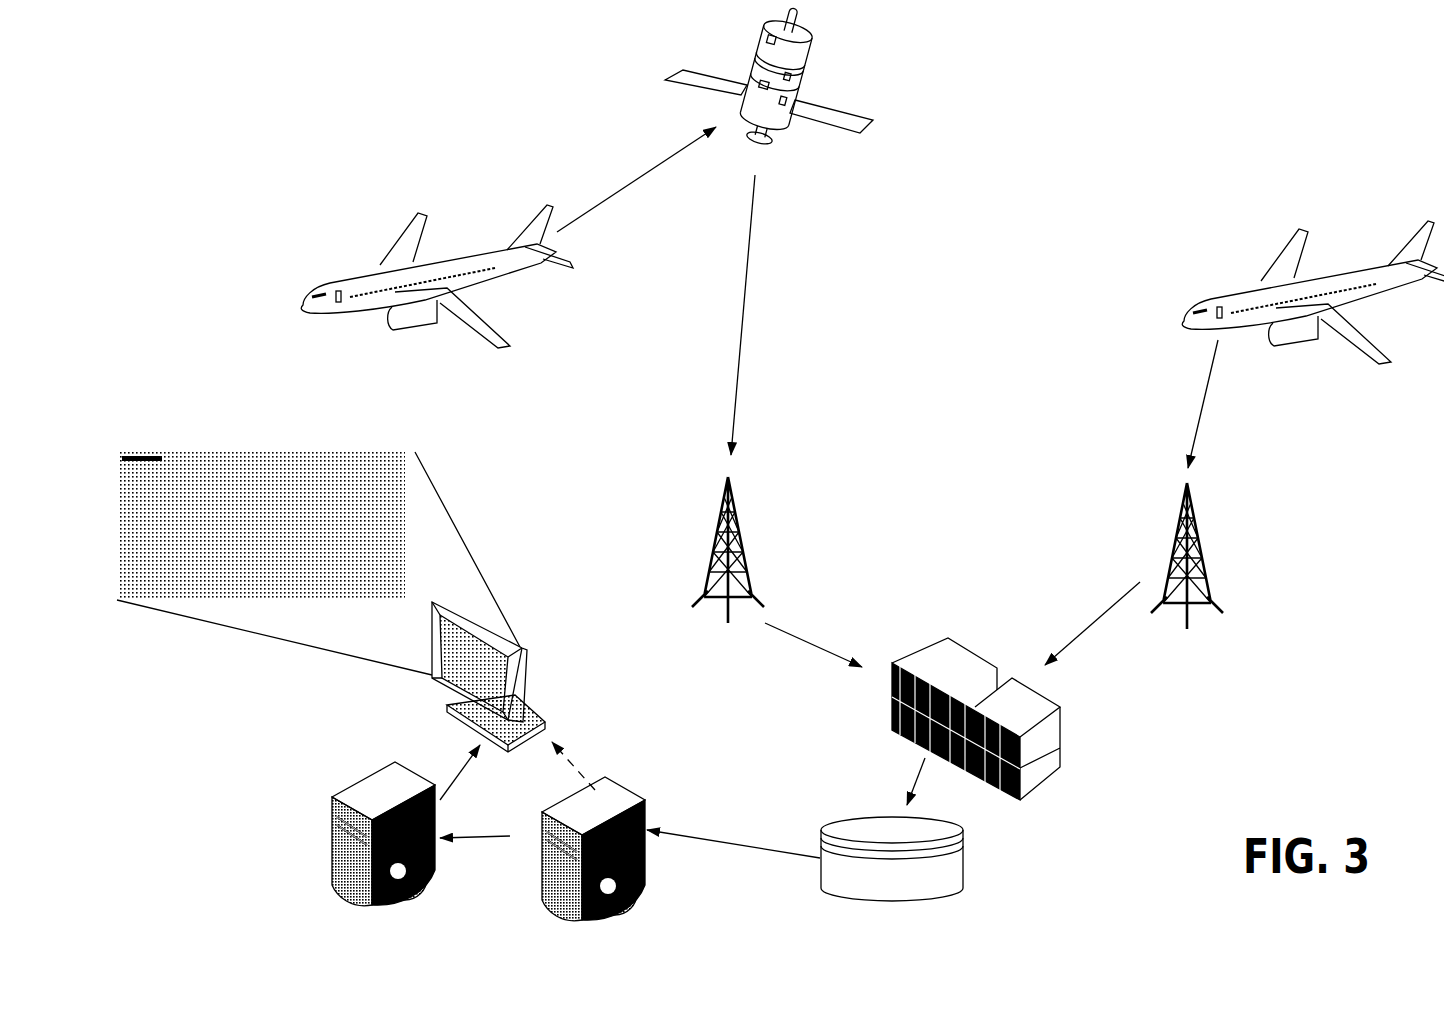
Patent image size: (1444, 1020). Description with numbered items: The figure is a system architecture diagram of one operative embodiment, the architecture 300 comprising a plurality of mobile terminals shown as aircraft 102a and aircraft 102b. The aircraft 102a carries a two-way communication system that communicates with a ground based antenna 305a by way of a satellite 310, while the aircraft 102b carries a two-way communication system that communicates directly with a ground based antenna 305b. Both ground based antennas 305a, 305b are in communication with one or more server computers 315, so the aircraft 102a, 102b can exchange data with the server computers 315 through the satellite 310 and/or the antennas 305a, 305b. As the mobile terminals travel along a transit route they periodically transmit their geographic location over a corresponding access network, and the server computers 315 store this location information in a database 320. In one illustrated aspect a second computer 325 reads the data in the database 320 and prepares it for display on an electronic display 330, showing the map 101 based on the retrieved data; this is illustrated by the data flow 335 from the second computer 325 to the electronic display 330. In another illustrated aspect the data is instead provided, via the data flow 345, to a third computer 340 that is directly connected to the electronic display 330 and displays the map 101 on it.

The architecture 300 is at (1377, 93).
The satellite 310 is at (813, 78).
The aircraft 102a is at (365, 262).
The aircraft 102b is at (1265, 278).
The ground based antenna 305a is at (760, 572).
The ground based antenna 305b is at (1162, 550).
The server computers 315 is at (1072, 748).
The database 320 is at (970, 862).
The second computer 325 is at (645, 812).
The third computer 340 is at (327, 845).
The data flow 345 is at (474, 772).
The data flow 335 is at (586, 759).
The electronic display 330 is at (530, 673).
The map 101 is at (208, 452).